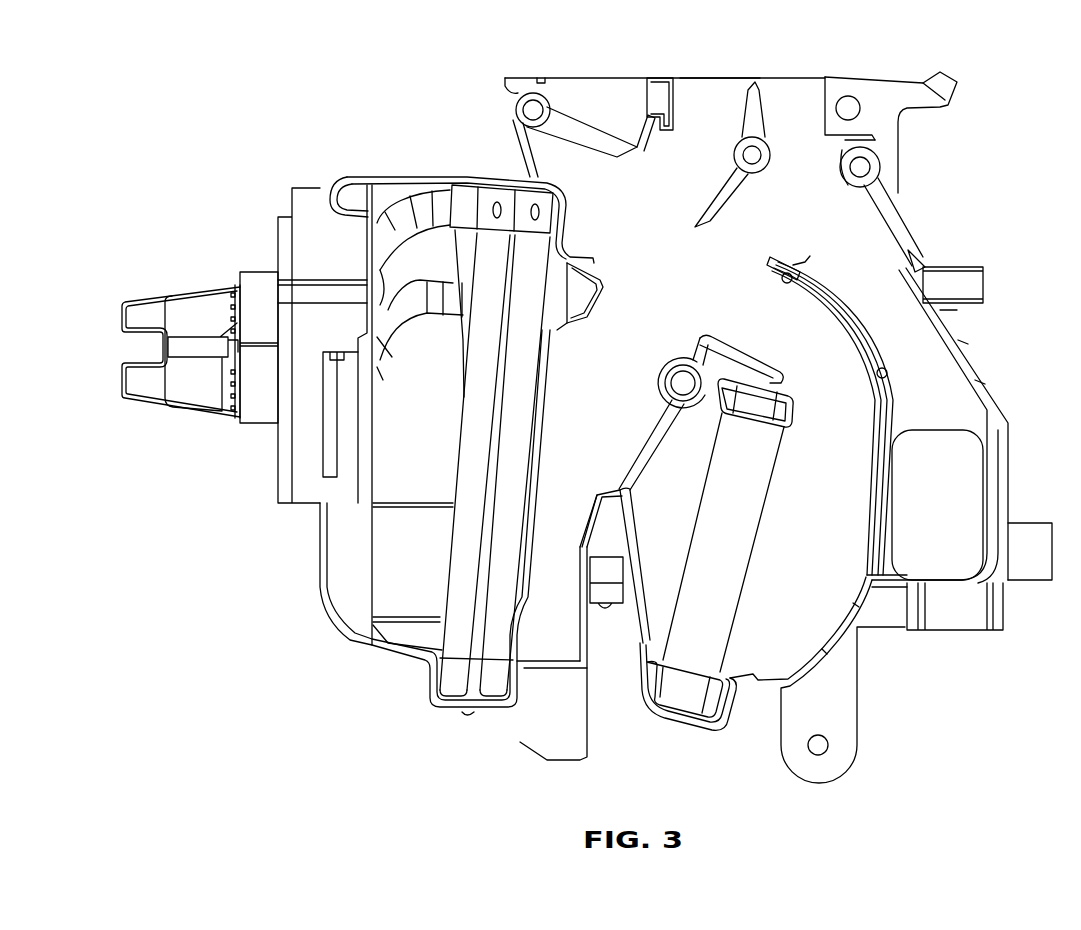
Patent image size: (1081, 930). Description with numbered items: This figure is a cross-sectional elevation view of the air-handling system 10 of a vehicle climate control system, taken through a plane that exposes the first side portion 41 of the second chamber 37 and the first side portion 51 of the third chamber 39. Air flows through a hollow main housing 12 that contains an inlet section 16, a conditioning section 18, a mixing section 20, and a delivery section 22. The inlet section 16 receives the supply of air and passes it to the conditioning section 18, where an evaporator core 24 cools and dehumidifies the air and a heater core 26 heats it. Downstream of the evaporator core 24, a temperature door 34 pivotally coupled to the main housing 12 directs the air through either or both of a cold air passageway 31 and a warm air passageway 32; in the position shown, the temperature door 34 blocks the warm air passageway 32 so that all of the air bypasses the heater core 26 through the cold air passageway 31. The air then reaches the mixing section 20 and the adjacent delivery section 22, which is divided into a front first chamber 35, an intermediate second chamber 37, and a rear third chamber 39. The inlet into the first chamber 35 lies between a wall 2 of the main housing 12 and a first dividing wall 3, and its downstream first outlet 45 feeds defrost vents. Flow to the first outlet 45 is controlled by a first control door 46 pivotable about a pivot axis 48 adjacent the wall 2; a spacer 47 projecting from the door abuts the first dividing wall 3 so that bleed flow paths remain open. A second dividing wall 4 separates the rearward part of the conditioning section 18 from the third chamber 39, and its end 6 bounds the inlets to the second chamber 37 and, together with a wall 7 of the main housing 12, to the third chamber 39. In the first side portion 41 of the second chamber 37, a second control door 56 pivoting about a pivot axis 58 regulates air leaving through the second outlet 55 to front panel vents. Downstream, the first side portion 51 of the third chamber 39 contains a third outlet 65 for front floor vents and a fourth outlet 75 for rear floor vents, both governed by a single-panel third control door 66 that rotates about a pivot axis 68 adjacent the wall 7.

The wall 2 is at (527, 150).
The first dividing wall 3 is at (667, 133).
The second dividing wall 4 is at (817, 297).
The end of the second dividing wall 6 is at (770, 263).
The wall 7 is at (888, 155).
The air-handling system 10 is at (399, 130).
The main housing 12 is at (963, 338).
The inlet section 16 is at (407, 424).
The conditioning section 18 is at (562, 477).
The mixing section 20 is at (649, 264).
The delivery section 22 is at (821, 154).
The evaporator core 24 is at (457, 567).
The heater core 26 is at (718, 588).
The cold air passageway 31 is at (613, 355).
The warm air passageway 32 is at (672, 492).
The temperature door 34 is at (657, 422).
The first chamber 35 is at (568, 103).
The second chamber 37 is at (736, 81).
The first side portion of the second chamber 41 is at (706, 128).
The third chamber 39 is at (945, 267).
The first side portion of the third chamber 51 is at (907, 302).
The first outlet 45 is at (593, 77).
The first control door 46 is at (583, 133).
The spacer 47 is at (637, 130).
The pivot axis 48 is at (530, 105).
The second outlet 55 is at (697, 77).
The second control door 56 is at (720, 202).
The pivot axis 58 is at (760, 152).
The third outlet 65 is at (929, 517).
The third control door 66 is at (883, 203).
The pivot axis 68 is at (862, 162).
The fourth outlet 75 is at (952, 630).